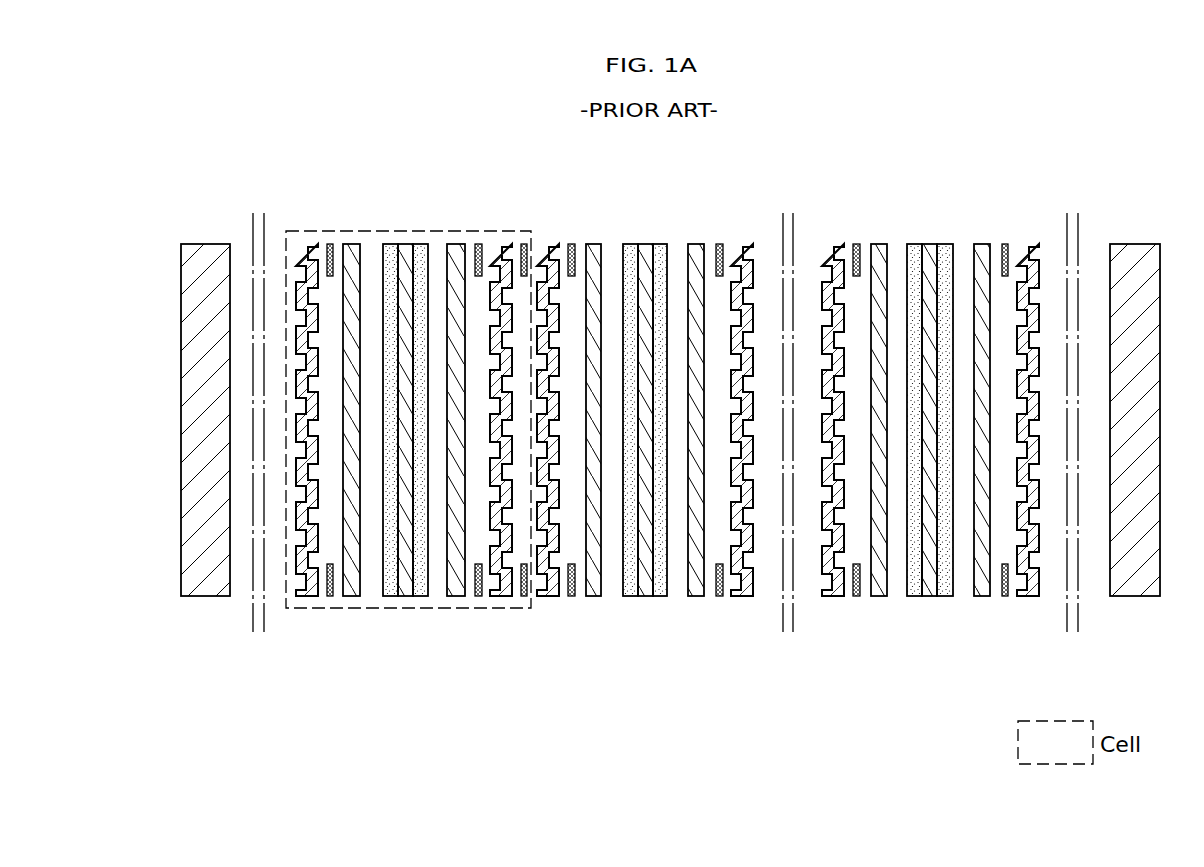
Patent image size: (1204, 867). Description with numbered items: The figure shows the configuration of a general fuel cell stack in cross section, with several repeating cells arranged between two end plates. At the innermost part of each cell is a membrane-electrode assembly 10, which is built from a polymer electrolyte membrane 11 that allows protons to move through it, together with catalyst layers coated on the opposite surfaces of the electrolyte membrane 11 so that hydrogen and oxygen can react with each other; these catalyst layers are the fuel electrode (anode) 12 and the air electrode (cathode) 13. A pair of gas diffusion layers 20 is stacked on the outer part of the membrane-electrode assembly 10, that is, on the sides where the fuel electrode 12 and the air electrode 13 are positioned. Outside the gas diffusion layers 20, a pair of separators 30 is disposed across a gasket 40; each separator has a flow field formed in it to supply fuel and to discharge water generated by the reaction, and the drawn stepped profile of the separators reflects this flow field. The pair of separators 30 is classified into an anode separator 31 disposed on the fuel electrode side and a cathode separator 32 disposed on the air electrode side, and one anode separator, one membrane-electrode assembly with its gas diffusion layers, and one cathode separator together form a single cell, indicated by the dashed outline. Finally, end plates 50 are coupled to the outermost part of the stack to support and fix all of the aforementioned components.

The membrane-electrode assembly 10 is at (650, 496).
The polymer electrolyte membrane 11 is at (408, 596).
The fuel electrode (anode) 12 is at (415, 596).
The air electrode (cathode) 13 is at (392, 596).
The gas diffusion layer 20 is at (353, 596).
The separator 30 is at (657, 501).
The anode separator 31 is at (303, 596).
The cathode separator 32 is at (503, 596).
The gasket 40 is at (330, 246).
The end plate 50 is at (204, 585).